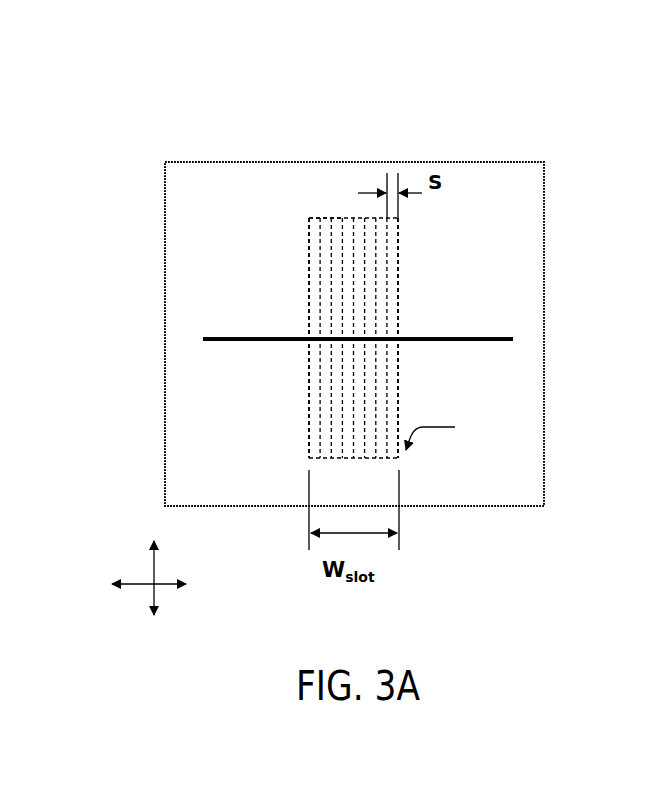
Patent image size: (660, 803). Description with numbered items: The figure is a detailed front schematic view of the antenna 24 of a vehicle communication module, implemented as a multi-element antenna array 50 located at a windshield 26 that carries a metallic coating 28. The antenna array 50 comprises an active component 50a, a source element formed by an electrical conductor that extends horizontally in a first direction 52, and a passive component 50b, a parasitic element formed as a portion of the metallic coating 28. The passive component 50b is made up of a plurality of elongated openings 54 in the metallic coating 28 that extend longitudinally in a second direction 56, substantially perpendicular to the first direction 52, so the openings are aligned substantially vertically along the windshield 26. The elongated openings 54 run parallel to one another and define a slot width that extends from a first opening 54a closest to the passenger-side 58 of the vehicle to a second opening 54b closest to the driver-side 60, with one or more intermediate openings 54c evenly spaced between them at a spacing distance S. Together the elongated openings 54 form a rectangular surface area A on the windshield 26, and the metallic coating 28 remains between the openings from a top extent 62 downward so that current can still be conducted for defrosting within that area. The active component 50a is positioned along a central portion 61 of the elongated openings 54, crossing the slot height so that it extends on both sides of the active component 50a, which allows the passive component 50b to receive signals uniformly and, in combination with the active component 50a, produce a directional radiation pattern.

The antenna 24 is at (253, 90).
The antenna array 50 is at (354, 334).
The windshield 26 is at (188, 185).
The metallic coating 28 is at (354, 334).
The passenger-side 58 is at (122, 303).
The driver-side 60 is at (597, 312).
The central portion 61 is at (186, 352).
The active component 50a is at (492, 342).
The elongated openings 54 is at (321, 420).
The first opening 54a is at (309, 289).
The second opening 54b is at (400, 313).
The intermediate opening 54c is at (342, 218).
The rectangular surface area A is at (309, 247).
The top extent 62 is at (405, 219).
The passive component 50b is at (425, 277).
The first direction 52 is at (130, 582).
The second direction 56 is at (155, 578).